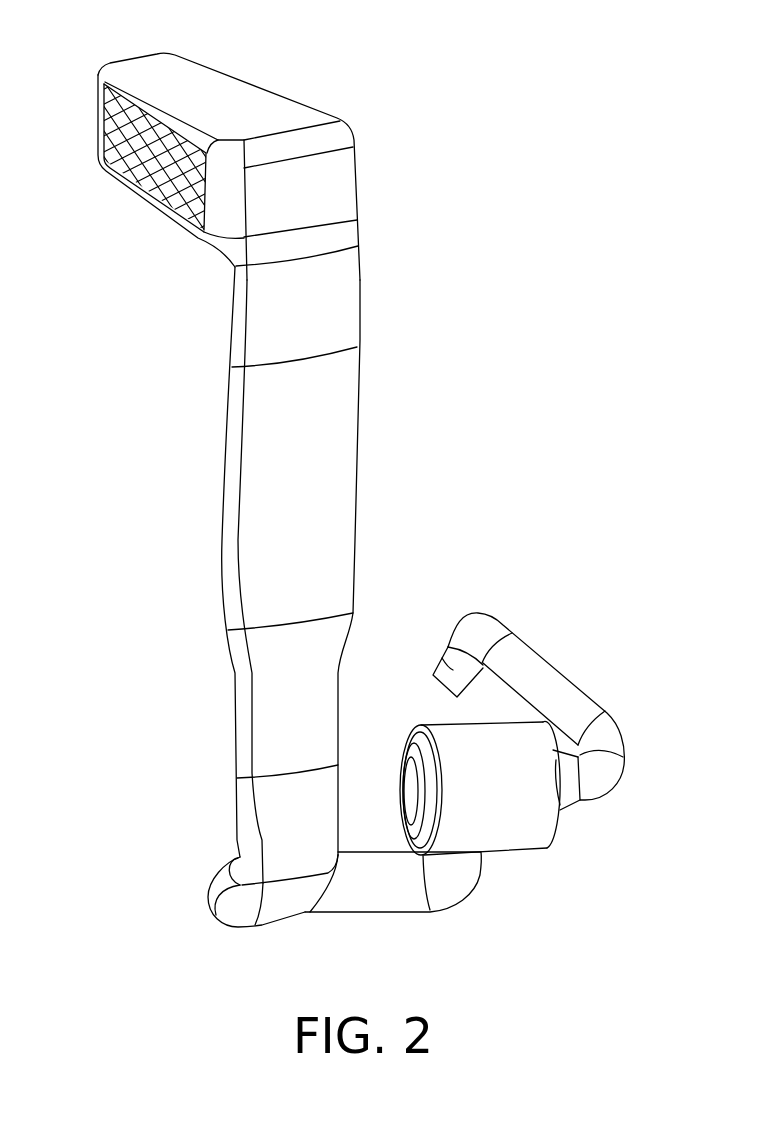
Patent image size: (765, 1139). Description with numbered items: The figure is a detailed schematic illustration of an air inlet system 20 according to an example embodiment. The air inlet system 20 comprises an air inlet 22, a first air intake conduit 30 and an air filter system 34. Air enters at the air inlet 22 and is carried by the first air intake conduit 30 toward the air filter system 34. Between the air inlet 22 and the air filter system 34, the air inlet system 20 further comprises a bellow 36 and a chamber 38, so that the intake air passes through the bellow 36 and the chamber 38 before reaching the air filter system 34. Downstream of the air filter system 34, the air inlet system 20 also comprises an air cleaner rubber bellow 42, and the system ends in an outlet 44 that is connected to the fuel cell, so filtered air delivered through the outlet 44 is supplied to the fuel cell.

The air inlet system 20 is at (455, 312).
The air inlet 22 is at (133, 189).
The first air intake conduit 30 is at (300, 503).
The air filter system 34 is at (502, 790).
The bellow 36 is at (288, 828).
The chamber 38 is at (450, 873).
The air cleaner rubber bellow 42 is at (567, 785).
The outlet 44 is at (438, 660).